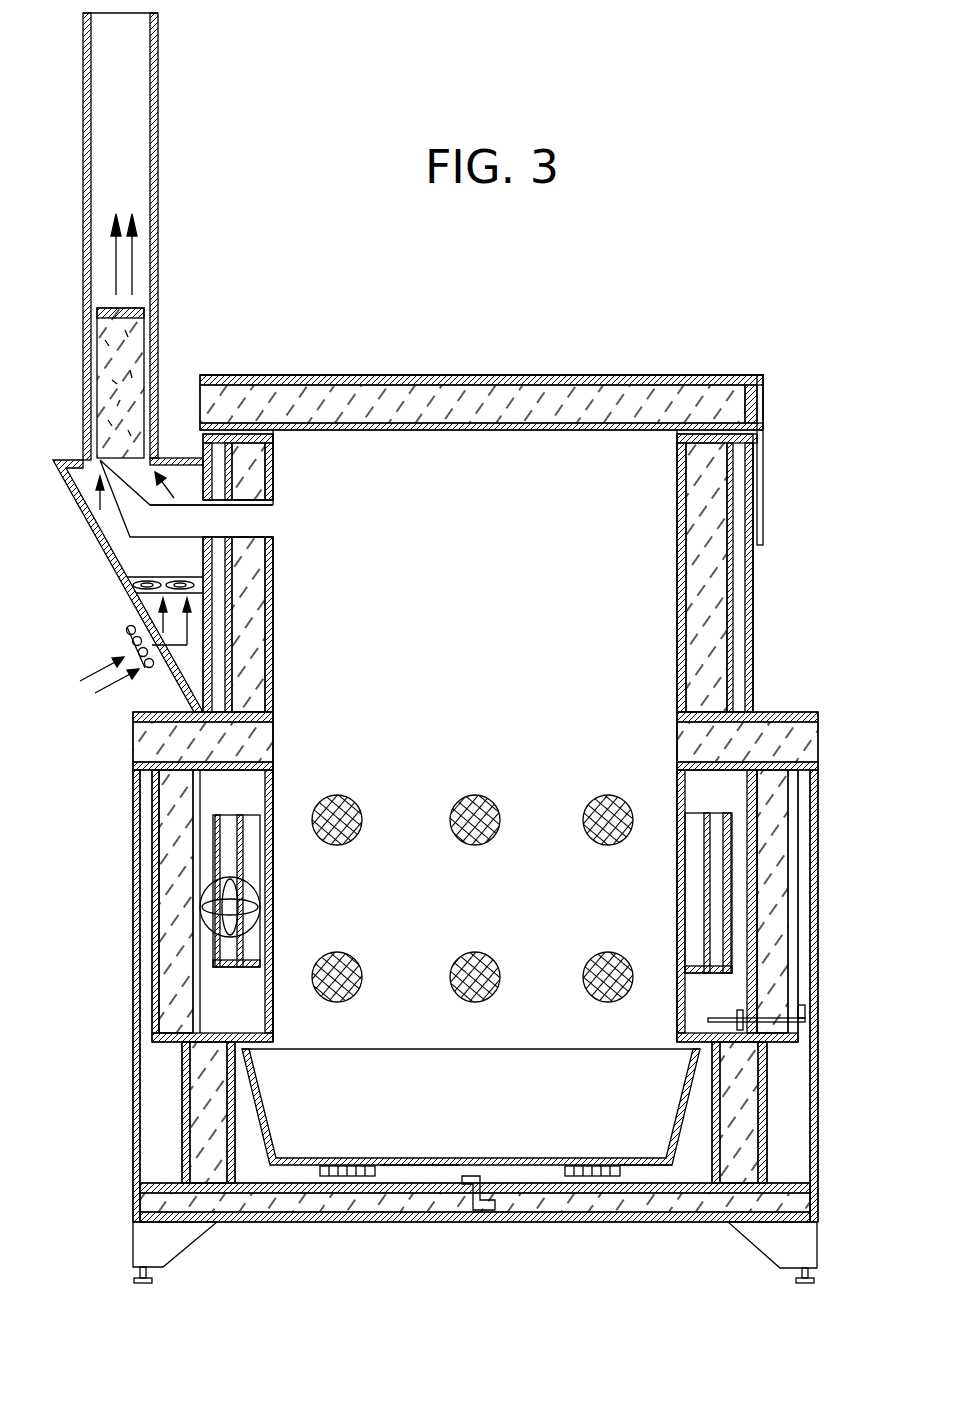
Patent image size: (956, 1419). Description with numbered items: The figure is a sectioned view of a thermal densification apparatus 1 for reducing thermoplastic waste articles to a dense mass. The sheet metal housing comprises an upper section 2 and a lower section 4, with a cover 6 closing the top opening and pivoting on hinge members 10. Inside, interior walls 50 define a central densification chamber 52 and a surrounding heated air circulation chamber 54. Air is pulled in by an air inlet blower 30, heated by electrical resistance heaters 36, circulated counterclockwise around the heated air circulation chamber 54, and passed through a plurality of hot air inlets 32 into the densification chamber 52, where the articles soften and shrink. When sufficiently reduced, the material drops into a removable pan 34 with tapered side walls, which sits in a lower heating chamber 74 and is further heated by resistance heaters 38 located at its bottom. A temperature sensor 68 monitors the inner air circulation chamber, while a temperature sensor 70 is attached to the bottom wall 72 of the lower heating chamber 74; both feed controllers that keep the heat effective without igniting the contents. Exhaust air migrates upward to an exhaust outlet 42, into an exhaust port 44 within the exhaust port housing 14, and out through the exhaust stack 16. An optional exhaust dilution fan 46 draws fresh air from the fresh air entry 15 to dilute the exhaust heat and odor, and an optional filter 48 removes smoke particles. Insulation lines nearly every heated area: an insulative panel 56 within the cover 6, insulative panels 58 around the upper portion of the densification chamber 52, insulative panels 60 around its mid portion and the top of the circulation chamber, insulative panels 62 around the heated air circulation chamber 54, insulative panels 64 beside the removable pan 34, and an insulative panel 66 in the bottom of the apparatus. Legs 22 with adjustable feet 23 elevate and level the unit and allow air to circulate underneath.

The thermal densification apparatus 1 is at (846, 708).
The upper section 2 is at (755, 600).
The lower section 4 is at (818, 916).
The cover 6 is at (612, 383).
The hinge members 10 is at (762, 450).
The exhaust port housing 14 is at (79, 512).
The fresh air entry 15 is at (128, 641).
The exhaust stack 16 is at (160, 133).
The legs 22 is at (197, 1239).
The adjustable feet 23 is at (142, 1288).
The air inlet blower 30 is at (262, 884).
The hot air inlets 32 is at (348, 797).
The removable pan 34 is at (260, 1089).
The electrical resistance heaters 36 is at (258, 812).
The resistance heaters 38 is at (392, 1166).
The exhaust outlet 42 is at (273, 518).
The exhaust port 44 is at (174, 536).
The exhaust dilution fan 46 is at (64, 458).
The filter 48 is at (110, 346).
The interior walls 50 is at (688, 683).
The densification chamber 52 is at (470, 650).
The heated air circulation chamber 54 is at (242, 1011).
The insulative panel 56 is at (448, 397).
The insulative panels 58 is at (265, 605).
The insulative panels 60 is at (139, 743).
The insulative panels 62 is at (160, 814).
The insulative panels 64 is at (205, 1088).
The insulative panel 66 is at (396, 1207).
The temperature sensor 68 is at (736, 1012).
The temperature sensor 70 is at (463, 1175).
The bottom wall 72 is at (647, 1173).
The lower heating chamber 74 is at (427, 1173).